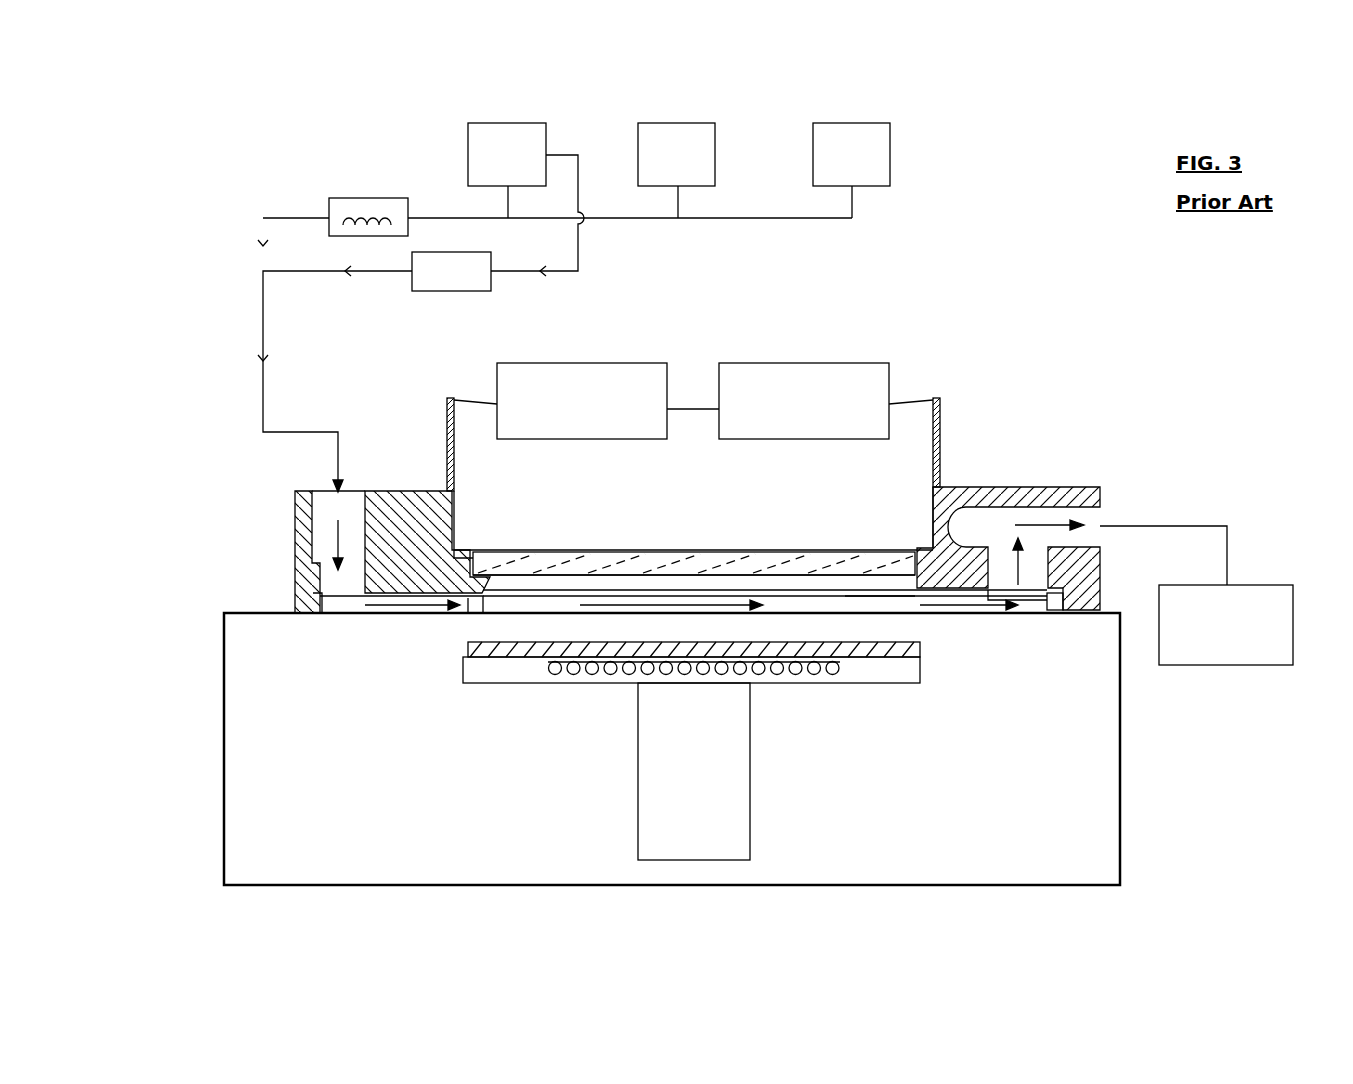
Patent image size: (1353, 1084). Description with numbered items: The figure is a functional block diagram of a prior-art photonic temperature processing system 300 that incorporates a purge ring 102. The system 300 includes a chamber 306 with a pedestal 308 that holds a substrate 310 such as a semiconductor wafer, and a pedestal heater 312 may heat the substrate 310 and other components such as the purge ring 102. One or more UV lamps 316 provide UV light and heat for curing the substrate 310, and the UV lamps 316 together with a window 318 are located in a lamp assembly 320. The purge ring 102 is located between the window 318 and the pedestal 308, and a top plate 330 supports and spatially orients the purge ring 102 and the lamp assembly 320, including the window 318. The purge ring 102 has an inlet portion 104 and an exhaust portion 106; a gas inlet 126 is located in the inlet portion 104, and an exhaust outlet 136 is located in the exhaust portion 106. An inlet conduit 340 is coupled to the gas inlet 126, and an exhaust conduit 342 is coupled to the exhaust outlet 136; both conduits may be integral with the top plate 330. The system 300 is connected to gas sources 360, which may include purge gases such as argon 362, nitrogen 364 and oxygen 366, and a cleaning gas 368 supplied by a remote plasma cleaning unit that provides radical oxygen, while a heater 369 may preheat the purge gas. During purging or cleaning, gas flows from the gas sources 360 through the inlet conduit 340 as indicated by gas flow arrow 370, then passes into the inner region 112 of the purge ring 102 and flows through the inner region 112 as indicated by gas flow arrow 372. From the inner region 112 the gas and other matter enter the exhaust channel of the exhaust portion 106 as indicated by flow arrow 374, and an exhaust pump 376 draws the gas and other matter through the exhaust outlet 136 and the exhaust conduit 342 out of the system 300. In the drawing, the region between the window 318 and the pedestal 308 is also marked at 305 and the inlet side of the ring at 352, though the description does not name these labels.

The photonic temperature processing system 300 is at (140, 147).
The chamber 306 is at (224, 745).
The pedestal 308 is at (505, 675).
The substrate 310 is at (468, 648).
The pedestal heater 312 is at (833, 672).
The UV lamps 316 is at (643, 372).
The window 318 is at (880, 560).
The lamp assembly 320 is at (945, 428).
The top plate 330 is at (430, 490).
The inlet conduit 340 is at (325, 538).
The exhaust conduit 342 is at (1090, 515).
The inlet channel 352 is at (430, 593).
The gas sources 360 is at (1020, 172).
The argon 362 is at (890, 130).
The nitrogen 364 is at (638, 141).
The oxygen 366 is at (468, 141).
The cleaning gas 368 is at (491, 280).
The heater 369 is at (340, 198).
The gas flow arrow 370 is at (330, 535).
The gas flow arrow 372 is at (665, 560).
The flow arrow 374 is at (985, 605).
The exhaust pump 376 is at (1275, 655).
The purge ring 102 is at (921, 627).
The inlet portion 104 is at (340, 618).
The exhaust portion 106 is at (960, 620).
The inner region 112 is at (580, 560).
The gas inlet 126 is at (335, 615).
The exhaust outlet 136 is at (1035, 600).
The processing region 305 is at (805, 560).